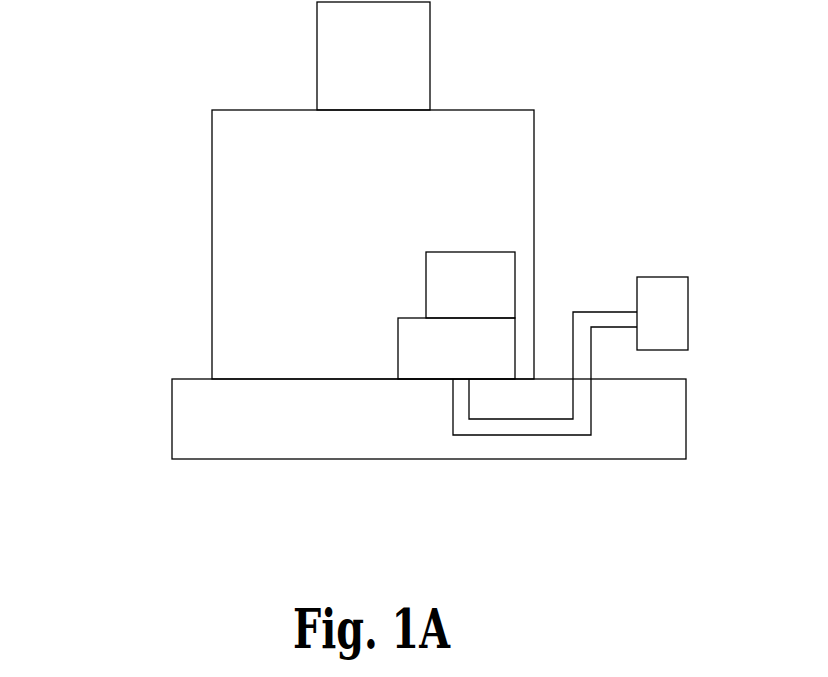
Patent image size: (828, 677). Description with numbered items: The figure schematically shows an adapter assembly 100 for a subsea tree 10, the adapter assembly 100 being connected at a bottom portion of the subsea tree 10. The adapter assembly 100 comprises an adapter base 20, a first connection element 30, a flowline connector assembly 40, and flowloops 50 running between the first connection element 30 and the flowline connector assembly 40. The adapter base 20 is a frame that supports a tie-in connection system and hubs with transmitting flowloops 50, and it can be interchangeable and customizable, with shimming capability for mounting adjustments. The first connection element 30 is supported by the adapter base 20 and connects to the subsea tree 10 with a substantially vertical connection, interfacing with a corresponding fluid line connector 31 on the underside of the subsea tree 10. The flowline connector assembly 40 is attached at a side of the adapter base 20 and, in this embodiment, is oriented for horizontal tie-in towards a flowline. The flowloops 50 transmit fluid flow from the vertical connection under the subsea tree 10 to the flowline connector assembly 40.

The adapter assembly 100 is at (128, 418).
The subsea tree 10 is at (534, 203).
The adapter base 20 is at (285, 459).
The first connection element 30 is at (470, 357).
The fluid line connector 31 is at (515, 282).
The flowline connector assembly 40 is at (660, 276).
The flowloops 50 is at (530, 433).